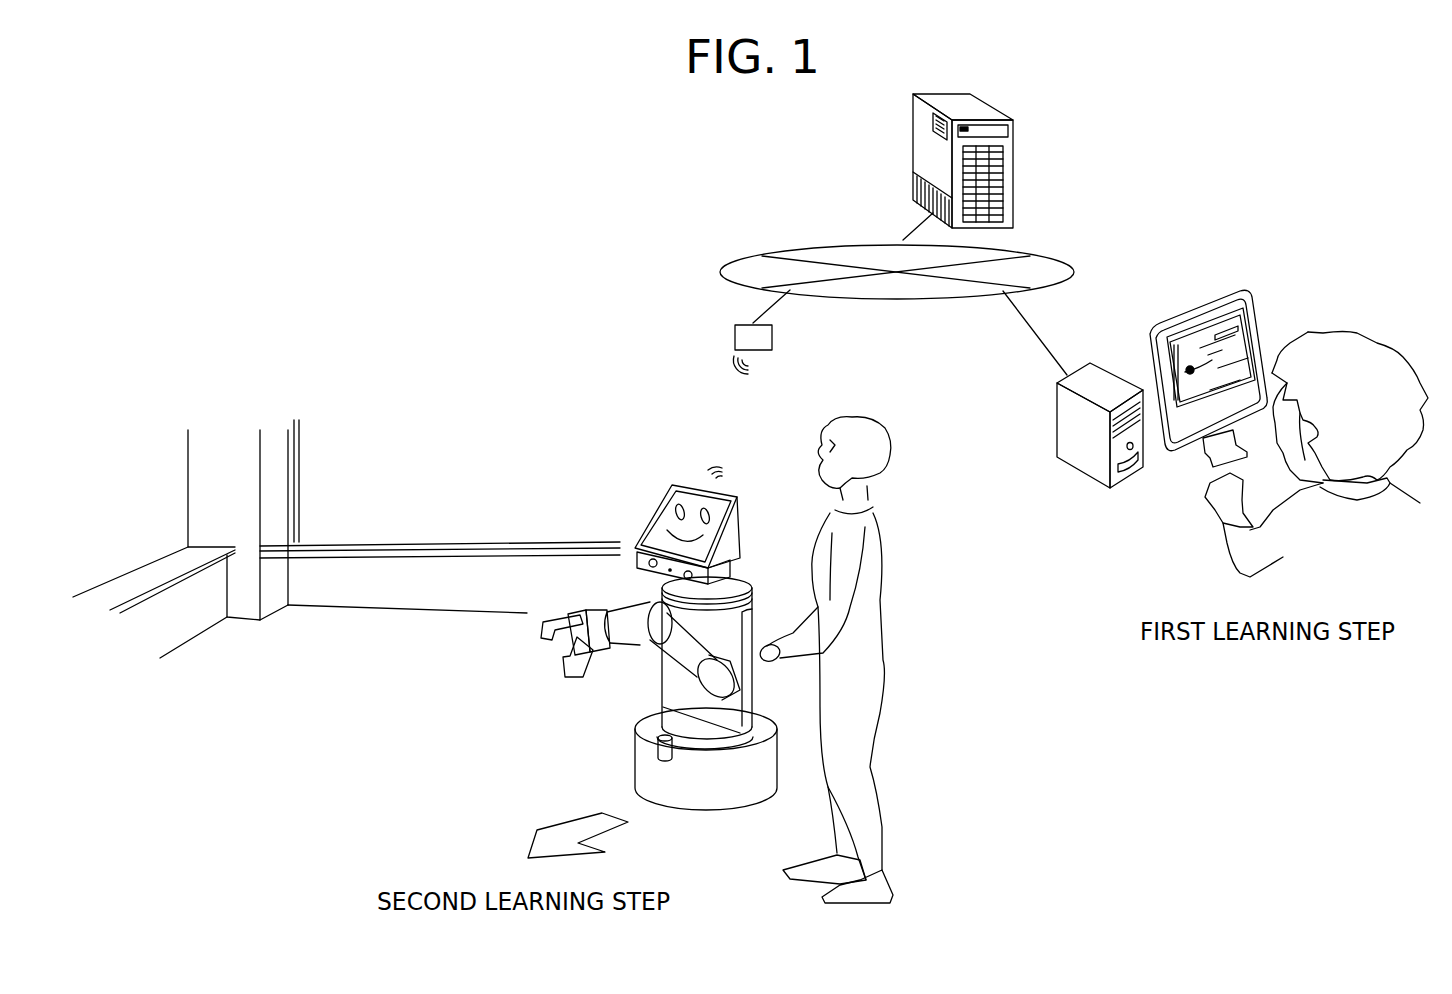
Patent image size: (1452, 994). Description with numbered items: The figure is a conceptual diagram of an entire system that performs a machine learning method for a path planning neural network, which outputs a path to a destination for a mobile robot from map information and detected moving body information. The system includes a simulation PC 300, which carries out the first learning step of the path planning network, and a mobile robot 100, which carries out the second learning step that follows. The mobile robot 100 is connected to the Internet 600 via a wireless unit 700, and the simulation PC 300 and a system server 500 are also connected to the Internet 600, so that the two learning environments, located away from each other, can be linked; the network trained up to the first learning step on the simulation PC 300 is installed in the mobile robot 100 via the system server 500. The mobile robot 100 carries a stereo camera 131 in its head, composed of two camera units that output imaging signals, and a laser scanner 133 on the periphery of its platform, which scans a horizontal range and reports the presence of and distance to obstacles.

The mobile robot 100 is at (610, 507).
The stereo camera 131 is at (670, 578).
The laser scanner 133 is at (655, 751).
The simulation PC 300 is at (1283, 270).
The system server 500 is at (957, 101).
The Internet 600 is at (797, 247).
The wireless unit 700 is at (735, 332).